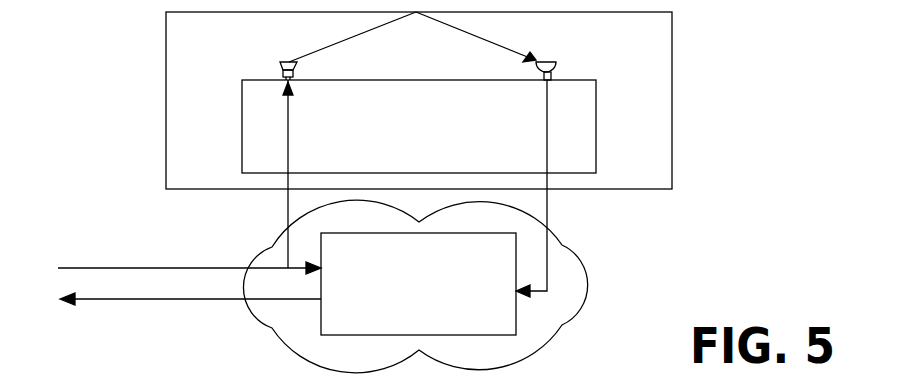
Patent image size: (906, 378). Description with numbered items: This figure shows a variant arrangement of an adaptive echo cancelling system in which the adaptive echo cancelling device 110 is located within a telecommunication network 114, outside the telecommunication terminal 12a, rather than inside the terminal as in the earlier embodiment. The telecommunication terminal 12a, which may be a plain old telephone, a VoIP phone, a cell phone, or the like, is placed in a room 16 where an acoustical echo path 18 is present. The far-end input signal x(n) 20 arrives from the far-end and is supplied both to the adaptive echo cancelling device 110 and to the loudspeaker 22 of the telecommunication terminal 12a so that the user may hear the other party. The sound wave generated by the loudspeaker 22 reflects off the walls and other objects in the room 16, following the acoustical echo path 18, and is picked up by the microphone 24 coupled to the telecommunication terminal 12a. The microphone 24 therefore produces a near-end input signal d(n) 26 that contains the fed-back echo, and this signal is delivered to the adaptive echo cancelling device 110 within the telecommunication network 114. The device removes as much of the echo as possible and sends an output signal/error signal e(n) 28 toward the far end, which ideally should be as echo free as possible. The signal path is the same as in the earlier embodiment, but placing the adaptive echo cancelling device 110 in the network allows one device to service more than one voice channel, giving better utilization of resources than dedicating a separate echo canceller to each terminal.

The room 16 is at (672, 37).
The acoustical echo path 18 is at (330, 46).
The loudspeaker 22 is at (280, 62).
The telecommunication terminal 12a is at (258, 121).
The microphone 24 is at (557, 68).
The near-end input signal d(n) 26 is at (549, 120).
The adaptive echo cancelling device 110 is at (450, 268).
The telecommunication network 114 is at (603, 253).
The far-end input signal x(n) 20 is at (161, 266).
The output signal/error signal e(n) 28 is at (161, 301).